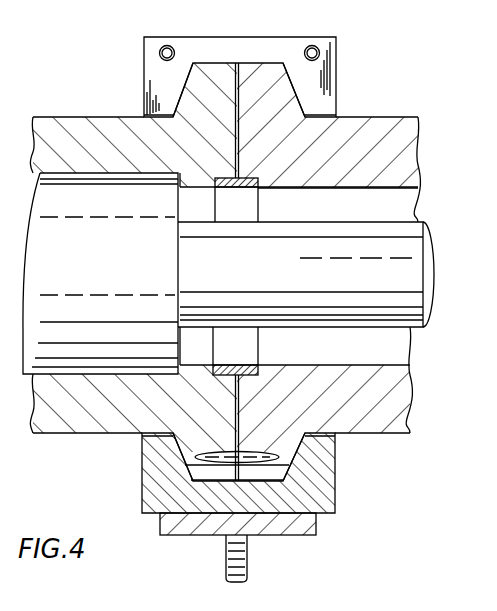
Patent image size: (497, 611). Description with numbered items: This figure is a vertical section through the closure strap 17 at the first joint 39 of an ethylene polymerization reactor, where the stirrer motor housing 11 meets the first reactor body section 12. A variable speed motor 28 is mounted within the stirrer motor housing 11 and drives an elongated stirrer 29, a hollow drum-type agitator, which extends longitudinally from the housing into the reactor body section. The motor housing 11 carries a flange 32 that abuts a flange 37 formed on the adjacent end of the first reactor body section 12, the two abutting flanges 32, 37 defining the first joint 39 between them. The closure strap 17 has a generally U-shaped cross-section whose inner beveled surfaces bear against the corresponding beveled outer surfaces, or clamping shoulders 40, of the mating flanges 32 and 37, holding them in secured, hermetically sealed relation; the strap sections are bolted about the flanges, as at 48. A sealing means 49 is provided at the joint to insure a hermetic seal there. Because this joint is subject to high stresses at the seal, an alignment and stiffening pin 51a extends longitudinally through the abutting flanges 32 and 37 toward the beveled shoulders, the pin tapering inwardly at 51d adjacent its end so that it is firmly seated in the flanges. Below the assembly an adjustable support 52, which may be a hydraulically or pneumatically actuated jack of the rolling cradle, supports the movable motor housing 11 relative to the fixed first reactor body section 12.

The stirrer motor housing 11 is at (84, 152).
The first reactor body section 12 is at (382, 154).
The strap 17 is at (337, 72).
The variable speed motor 28 is at (114, 274).
The stirrer 29 is at (326, 276).
The flange 32 is at (219, 104).
The flange 37 is at (277, 104).
The first joint 39 is at (240, 152).
The clamping shoulders 40 is at (177, 107).
The bolts 48 is at (167, 45).
The sealing means 49 is at (258, 192).
The alignment and stiffening pin 51a is at (277, 459).
The tapered pin end 51d is at (256, 479).
The adjustable supports 52 is at (249, 562).